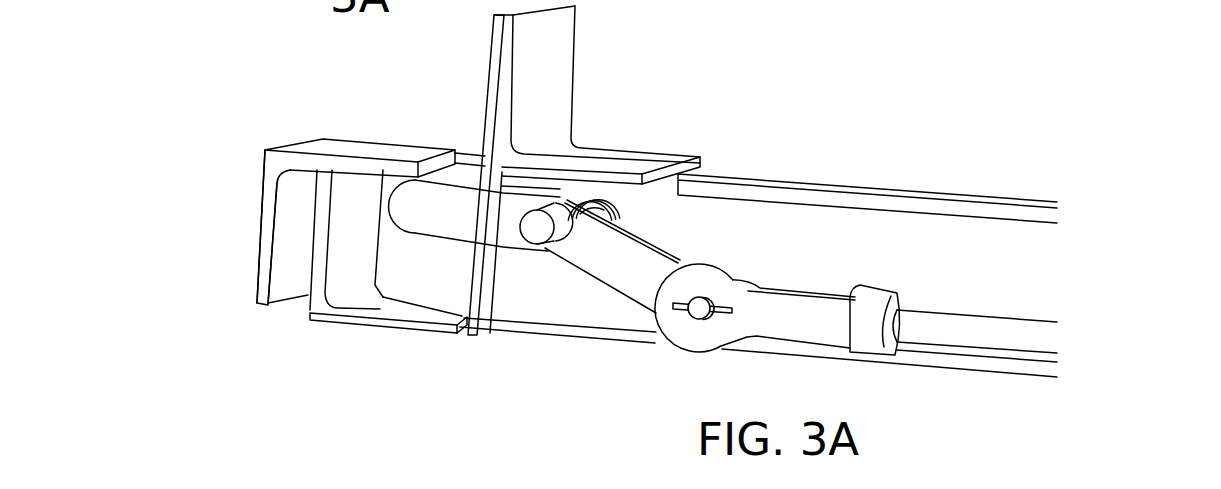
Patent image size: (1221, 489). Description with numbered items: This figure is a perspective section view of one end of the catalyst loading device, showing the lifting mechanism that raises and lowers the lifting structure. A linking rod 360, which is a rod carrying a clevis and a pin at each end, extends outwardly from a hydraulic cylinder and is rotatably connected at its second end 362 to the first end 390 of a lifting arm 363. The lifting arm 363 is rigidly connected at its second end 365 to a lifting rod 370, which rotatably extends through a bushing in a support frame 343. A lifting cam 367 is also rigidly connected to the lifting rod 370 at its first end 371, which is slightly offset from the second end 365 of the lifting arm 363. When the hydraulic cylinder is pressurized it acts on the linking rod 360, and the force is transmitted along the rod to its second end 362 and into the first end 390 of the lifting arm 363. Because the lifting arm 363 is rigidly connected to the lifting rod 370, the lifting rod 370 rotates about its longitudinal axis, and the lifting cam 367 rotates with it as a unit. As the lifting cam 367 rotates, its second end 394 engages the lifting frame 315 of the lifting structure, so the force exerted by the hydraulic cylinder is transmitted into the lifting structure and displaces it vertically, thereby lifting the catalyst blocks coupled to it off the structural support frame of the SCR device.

The lifting frame 315 is at (290, 178).
The support frame 343 is at (362, 188).
The linking rod 360 is at (978, 335).
The second end of linking rod 362 is at (700, 312).
The lifting arm 363 is at (610, 247).
The second end of lifting arm 365 is at (558, 193).
The lifting cam 367 is at (447, 217).
The lifting rod 370 is at (537, 222).
The first end of lifting cam 371 is at (588, 185).
The first end of lifting arm 390 is at (683, 247).
The second end of lifting cam 394 is at (413, 203).